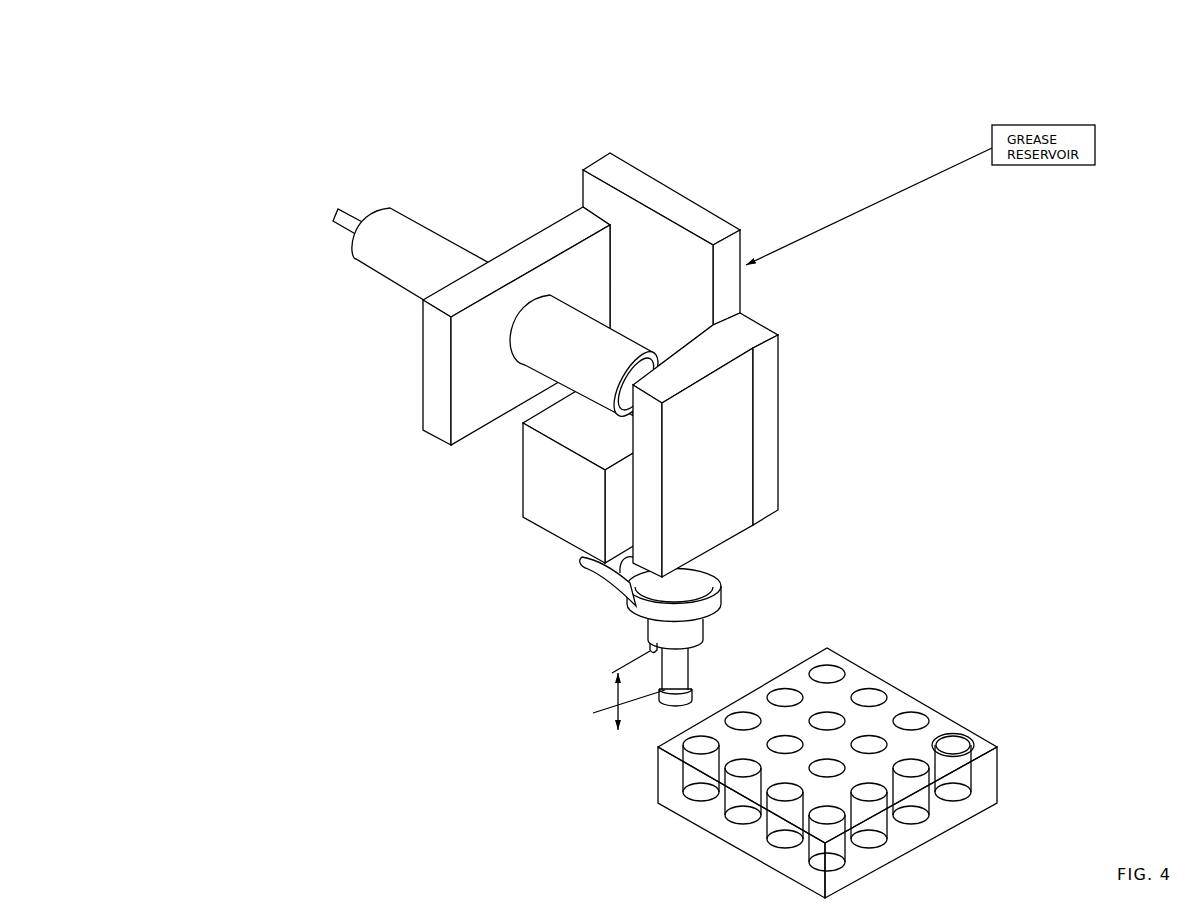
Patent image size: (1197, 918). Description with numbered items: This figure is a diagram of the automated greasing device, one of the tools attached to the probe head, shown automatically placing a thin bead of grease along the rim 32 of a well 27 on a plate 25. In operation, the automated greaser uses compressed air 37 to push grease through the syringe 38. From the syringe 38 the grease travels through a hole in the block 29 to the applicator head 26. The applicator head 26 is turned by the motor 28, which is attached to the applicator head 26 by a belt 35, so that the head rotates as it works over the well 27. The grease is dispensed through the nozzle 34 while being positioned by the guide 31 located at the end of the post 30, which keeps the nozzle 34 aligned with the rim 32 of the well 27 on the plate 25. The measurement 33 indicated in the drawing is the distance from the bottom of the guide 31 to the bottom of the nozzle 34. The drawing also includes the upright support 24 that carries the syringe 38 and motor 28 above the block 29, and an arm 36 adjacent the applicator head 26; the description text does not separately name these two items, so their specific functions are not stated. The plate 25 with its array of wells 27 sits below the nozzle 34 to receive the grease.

The support bracket 24 is at (679, 194).
The plate 25 is at (918, 695).
The applicator head 26 is at (728, 578).
The well 27 is at (679, 768).
The motor 28 is at (521, 469).
The block 29 is at (757, 384).
The post 30 is at (694, 665).
The guide 31 is at (698, 688).
The rim 32 is at (971, 735).
The measurement 33 is at (616, 691).
The nozzle 34 is at (647, 647).
The belt 35 is at (607, 592).
The arm 36 is at (581, 563).
The compressed air 37 is at (330, 207).
The syringe 38 is at (388, 205).